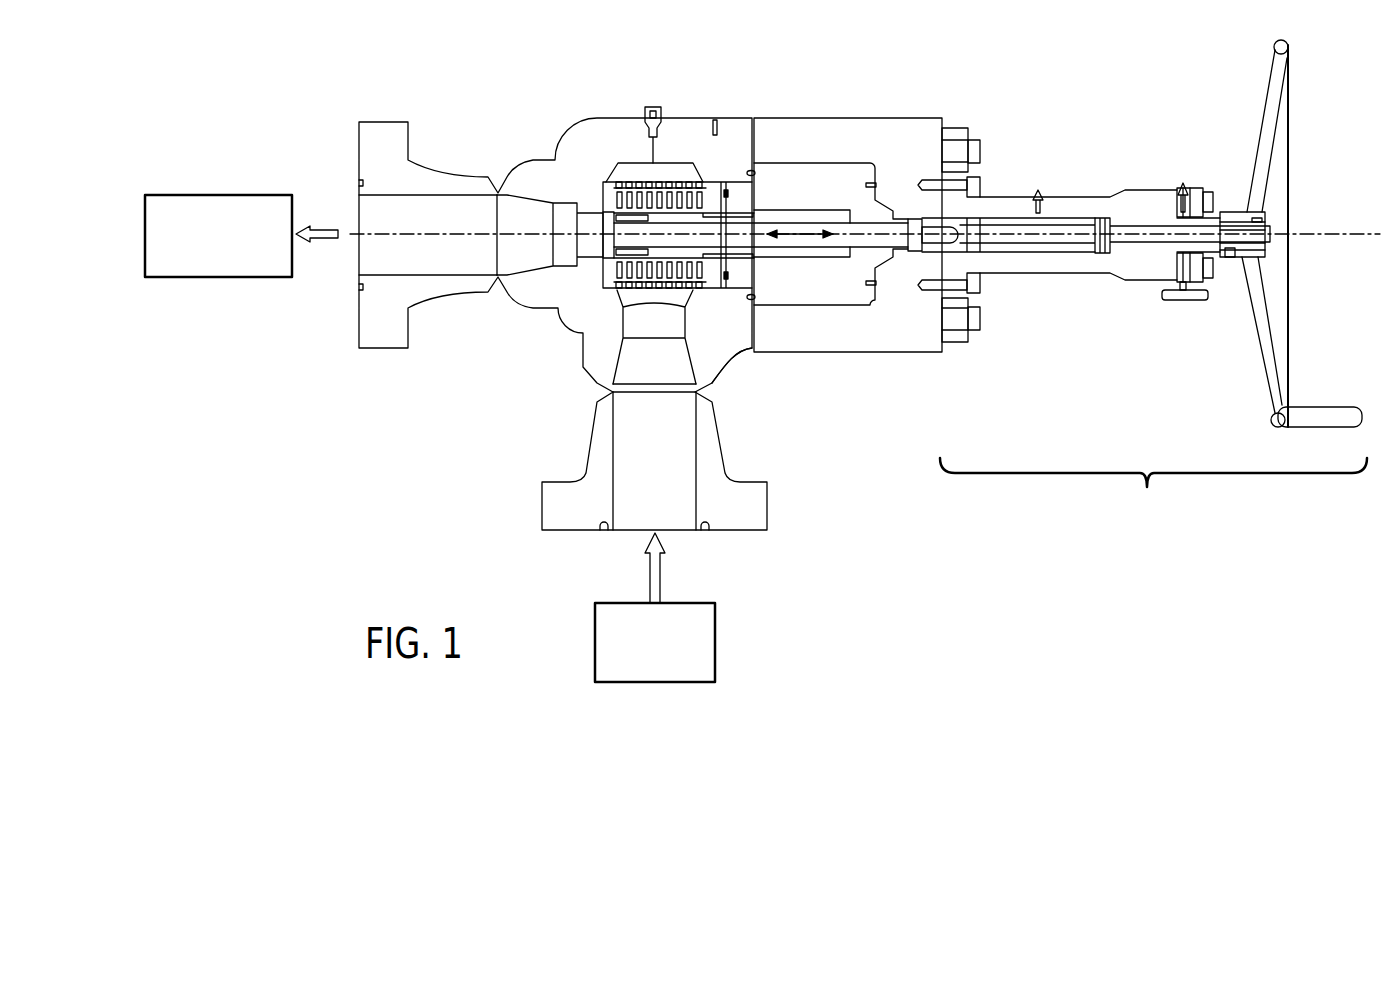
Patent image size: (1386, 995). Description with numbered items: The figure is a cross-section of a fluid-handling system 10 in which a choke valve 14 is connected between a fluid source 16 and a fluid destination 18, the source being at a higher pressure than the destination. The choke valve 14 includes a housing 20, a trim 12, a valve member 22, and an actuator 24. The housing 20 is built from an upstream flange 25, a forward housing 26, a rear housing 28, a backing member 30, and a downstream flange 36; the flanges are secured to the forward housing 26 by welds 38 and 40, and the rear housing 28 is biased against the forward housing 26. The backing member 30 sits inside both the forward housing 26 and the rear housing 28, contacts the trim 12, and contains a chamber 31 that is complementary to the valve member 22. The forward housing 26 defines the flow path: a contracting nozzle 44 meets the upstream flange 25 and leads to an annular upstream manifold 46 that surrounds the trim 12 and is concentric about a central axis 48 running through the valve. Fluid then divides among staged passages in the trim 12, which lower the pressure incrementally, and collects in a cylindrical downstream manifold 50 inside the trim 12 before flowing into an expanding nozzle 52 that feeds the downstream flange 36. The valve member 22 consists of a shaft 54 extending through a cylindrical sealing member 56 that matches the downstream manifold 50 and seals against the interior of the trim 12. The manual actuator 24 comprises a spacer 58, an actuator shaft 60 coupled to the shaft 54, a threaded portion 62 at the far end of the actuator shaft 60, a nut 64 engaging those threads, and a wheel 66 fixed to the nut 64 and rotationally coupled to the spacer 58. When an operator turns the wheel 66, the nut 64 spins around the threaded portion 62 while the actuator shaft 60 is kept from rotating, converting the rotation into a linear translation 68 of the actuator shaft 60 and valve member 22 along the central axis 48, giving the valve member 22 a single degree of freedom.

The fluid-handling system 10 is at (361, 542).
The trim 12 is at (660, 179).
The choke valve 14 is at (742, 117).
The fluid source 16 is at (716, 642).
The fluid destination 18 is at (218, 195).
The housing 20 is at (738, 354).
The valve member 22 is at (614, 209).
The actuator 24 is at (1153, 489).
The upstream flange 25 is at (768, 503).
The forward housing 26 is at (678, 117).
The rear housing 28 is at (900, 118).
The backing member 30 is at (850, 163).
The chamber 31 is at (830, 260).
The downstream flange 36 is at (383, 122).
The weld 38 is at (497, 177).
The weld 40 is at (597, 389).
The contracting nozzle 44 is at (622, 350).
The upstream manifold 46 is at (632, 162).
The central axis 48 is at (1320, 235).
The downstream manifold 50 is at (607, 245).
The expanding nozzle 52 is at (527, 200).
The shaft 54 is at (790, 258).
The sealing member 56 is at (647, 218).
The spacer 58 is at (1040, 273).
The actuator shaft 60 is at (1087, 218).
The threaded portion 62 is at (1192, 218).
The nut 64 is at (1222, 212).
The wheel 66 is at (1288, 280).
The linear translation 68 is at (808, 210).